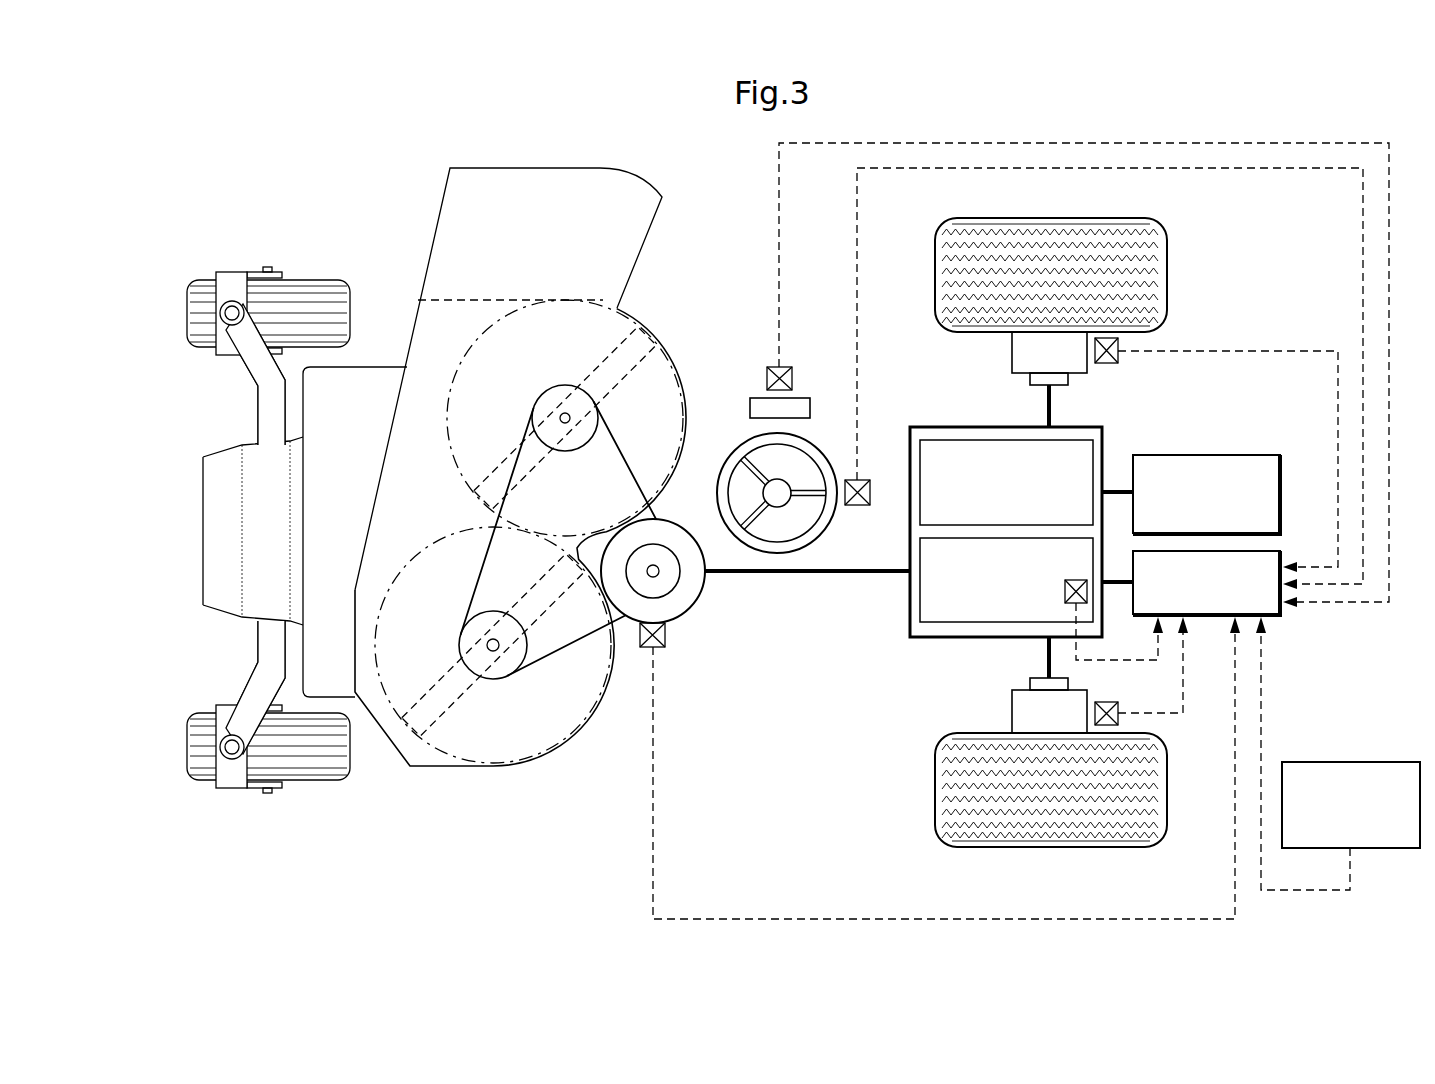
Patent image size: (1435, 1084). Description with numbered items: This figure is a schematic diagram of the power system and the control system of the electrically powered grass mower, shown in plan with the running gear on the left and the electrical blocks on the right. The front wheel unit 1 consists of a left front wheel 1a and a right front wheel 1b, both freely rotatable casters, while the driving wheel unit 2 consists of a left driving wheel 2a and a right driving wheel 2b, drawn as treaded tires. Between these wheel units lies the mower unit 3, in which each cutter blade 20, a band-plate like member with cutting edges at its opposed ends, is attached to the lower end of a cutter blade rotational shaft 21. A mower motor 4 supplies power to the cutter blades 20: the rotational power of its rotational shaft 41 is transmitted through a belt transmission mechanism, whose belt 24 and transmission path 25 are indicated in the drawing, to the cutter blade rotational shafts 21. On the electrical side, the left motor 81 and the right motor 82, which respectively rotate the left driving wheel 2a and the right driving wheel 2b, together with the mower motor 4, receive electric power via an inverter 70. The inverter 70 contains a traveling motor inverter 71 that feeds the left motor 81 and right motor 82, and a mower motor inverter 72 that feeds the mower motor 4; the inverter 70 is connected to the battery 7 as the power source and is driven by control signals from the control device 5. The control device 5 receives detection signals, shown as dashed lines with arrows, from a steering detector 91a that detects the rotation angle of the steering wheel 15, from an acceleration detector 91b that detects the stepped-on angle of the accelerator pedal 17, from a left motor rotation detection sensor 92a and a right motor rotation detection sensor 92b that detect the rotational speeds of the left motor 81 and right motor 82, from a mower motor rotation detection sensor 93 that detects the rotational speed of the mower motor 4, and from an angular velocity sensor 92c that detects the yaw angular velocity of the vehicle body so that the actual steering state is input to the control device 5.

The front wheel unit 1 is at (228, 535).
The left front wheel 1a is at (195, 748).
The right front wheel 1b is at (195, 312).
The driving wheel unit 2 is at (1051, 535).
The left driving wheel 2a is at (1035, 848).
The right driving wheel 2b is at (1035, 218).
The mower unit 3 is at (393, 750).
The mower motor 4 is at (690, 622).
The rotational shaft 41 is at (660, 575).
The control device 5 is at (1283, 618).
The battery 7 is at (1283, 490).
The steering wheel 15 is at (740, 462).
The accelerator pedal 17 is at (760, 398).
The cutter blade 20 is at (507, 457).
The cutter blade rotational shaft 21 is at (565, 413).
The belt 24 is at (640, 579).
The belt transmission mechanism 25 is at (625, 465).
The inverter 70 is at (1005, 520).
The traveling motor inverter 71 is at (1005, 440).
The mower motor inverter 72 is at (948, 624).
The left motor 81 is at (1012, 710).
The right motor 82 is at (1012, 353).
The steering detector 91a is at (862, 480).
The acceleration detector 91b is at (793, 378).
The left motor rotation detection sensor 92a is at (1108, 702).
The right motor rotation detection sensor 92b is at (1107, 363).
The angular velocity sensor 92c is at (1330, 762).
The mower motor rotation detection sensor 93 is at (651, 648).